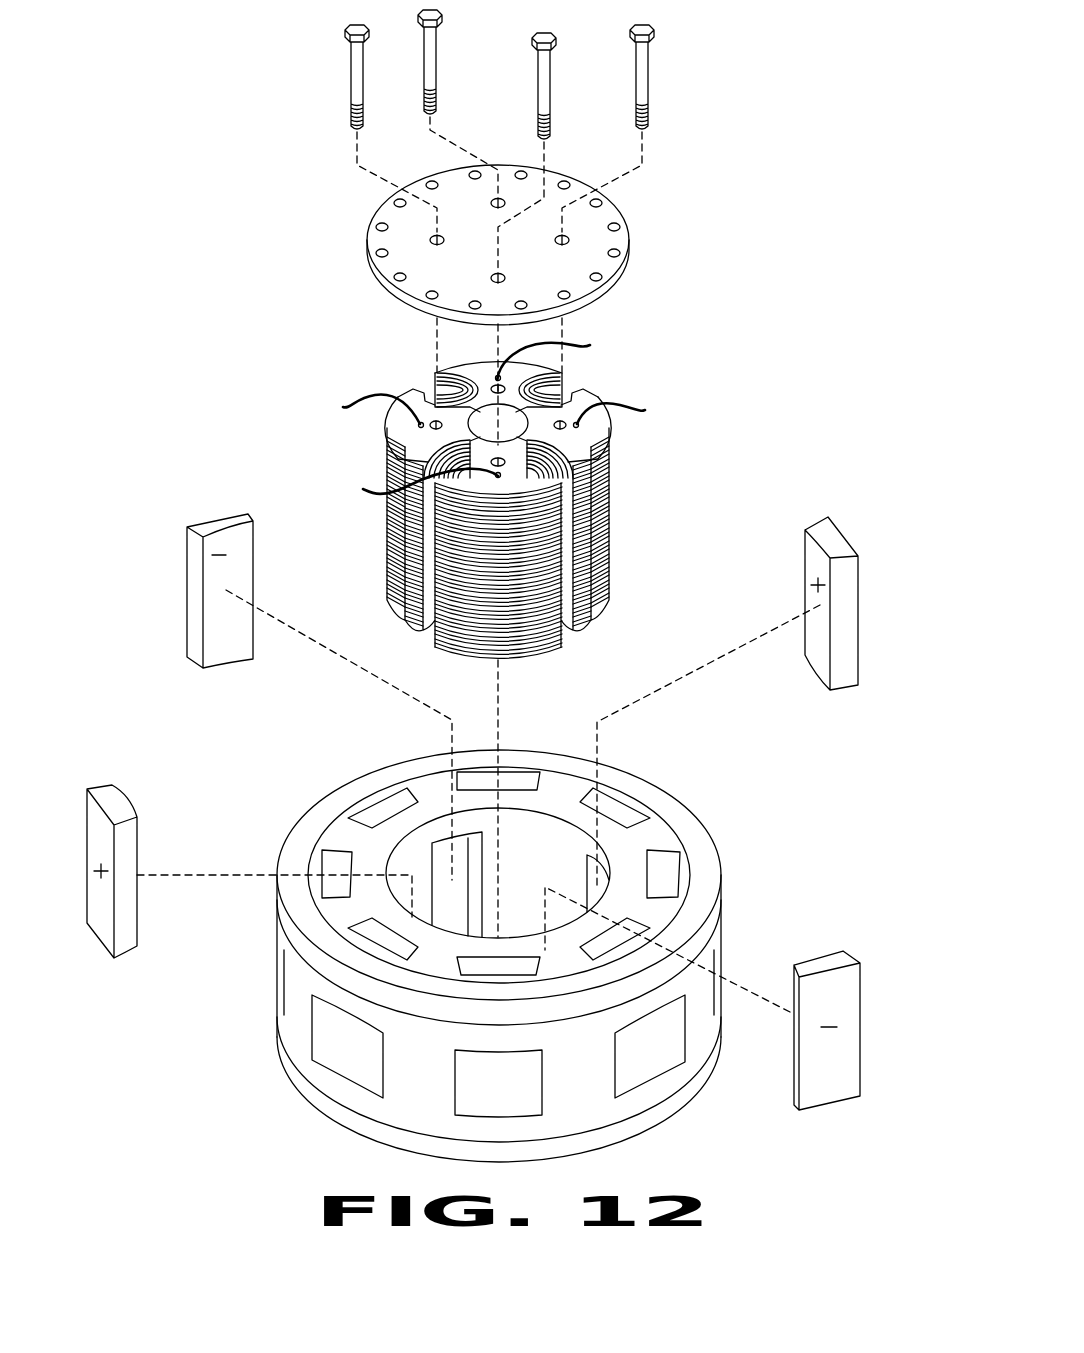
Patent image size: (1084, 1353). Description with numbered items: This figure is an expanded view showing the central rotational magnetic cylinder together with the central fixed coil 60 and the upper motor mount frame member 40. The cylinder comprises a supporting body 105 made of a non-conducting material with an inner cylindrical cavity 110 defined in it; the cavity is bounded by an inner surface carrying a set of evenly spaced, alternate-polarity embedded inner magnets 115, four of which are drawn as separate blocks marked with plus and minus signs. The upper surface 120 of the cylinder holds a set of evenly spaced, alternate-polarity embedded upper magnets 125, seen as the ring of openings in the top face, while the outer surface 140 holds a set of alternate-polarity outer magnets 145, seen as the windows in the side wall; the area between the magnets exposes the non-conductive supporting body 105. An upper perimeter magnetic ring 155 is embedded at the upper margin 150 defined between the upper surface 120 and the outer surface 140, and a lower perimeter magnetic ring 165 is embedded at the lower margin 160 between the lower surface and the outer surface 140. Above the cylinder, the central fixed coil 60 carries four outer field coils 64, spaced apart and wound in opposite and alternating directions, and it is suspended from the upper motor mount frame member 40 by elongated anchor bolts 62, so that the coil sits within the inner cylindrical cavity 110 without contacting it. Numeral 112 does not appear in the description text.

The elongated anchor bolts 62 is at (349, 74).
The upper motor mount frame member 40 is at (620, 241).
The outer field coils 64 is at (481, 370).
The central fixed coil 60 is at (613, 483).
The inner magnets 115 is at (203, 560).
The upper magnets 125 is at (513, 776).
The rotor pole 112 is at (540, 832).
The inner cylindrical cavity 110 is at (565, 863).
The upper margin 150 is at (297, 832).
The upper perimeter magnetic ring 155 is at (710, 868).
The upper surface 120 is at (657, 910).
The supporting body 105 is at (293, 991).
The outer surface 140 is at (293, 1043).
The outer magnets 145 is at (357, 1070).
The lower margin 160 is at (690, 1108).
The lower perimeter magnetic ring 165 is at (640, 1130).